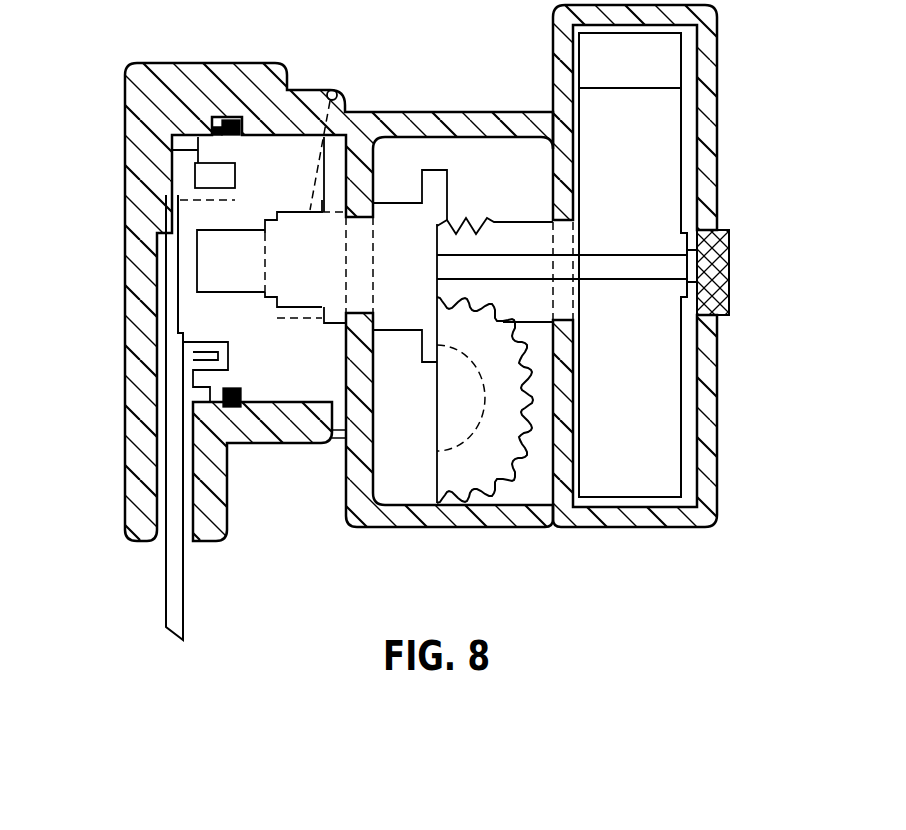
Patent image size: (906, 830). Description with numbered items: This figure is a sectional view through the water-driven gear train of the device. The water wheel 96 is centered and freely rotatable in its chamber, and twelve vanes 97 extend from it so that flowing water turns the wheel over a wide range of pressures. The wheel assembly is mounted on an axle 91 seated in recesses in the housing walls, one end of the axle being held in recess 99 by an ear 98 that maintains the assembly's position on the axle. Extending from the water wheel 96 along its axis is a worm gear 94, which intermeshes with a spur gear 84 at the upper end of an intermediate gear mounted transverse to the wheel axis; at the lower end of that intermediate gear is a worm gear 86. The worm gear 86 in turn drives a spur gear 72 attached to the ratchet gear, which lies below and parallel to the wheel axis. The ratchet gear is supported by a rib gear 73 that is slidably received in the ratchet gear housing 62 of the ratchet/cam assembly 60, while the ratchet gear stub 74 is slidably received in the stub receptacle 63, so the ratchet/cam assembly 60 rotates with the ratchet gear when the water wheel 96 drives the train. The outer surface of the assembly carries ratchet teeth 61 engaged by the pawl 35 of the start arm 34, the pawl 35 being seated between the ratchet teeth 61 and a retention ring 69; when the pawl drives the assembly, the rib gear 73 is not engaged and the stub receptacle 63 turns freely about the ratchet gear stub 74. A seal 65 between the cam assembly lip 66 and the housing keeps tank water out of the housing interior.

The start arm 34 is at (170, 606).
The pawl 35 is at (193, 348).
The ratchet/cam assembly 60 is at (273, 363).
The ratchet teeth 61 is at (173, 188).
The ratchet gear housing 62 is at (264, 300).
The stub receptacle 63 is at (265, 217).
The seal 65 is at (240, 122).
The cam assembly lip 66 is at (222, 118).
The retention ring 69 is at (200, 152).
The spur gear 72 is at (430, 172).
The rib gear 73 is at (332, 92).
The ratchet gear stub 74 is at (231, 261).
The spur gear 84 is at (486, 528).
The worm gear 86 is at (460, 416).
The axle 91 is at (628, 268).
The worm gear 94 is at (480, 220).
The water wheel 96 is at (655, 165).
The vanes 97 is at (665, 62).
The ear 98 is at (728, 295).
The recess 99 is at (728, 232).